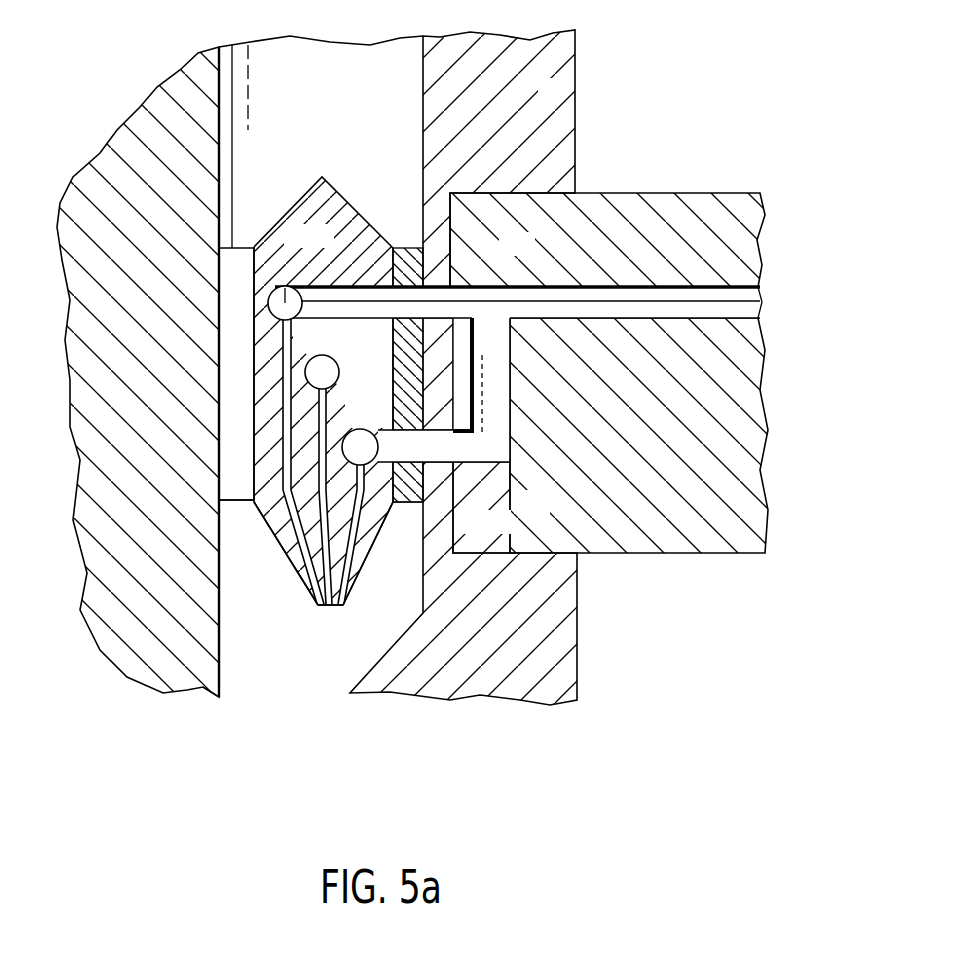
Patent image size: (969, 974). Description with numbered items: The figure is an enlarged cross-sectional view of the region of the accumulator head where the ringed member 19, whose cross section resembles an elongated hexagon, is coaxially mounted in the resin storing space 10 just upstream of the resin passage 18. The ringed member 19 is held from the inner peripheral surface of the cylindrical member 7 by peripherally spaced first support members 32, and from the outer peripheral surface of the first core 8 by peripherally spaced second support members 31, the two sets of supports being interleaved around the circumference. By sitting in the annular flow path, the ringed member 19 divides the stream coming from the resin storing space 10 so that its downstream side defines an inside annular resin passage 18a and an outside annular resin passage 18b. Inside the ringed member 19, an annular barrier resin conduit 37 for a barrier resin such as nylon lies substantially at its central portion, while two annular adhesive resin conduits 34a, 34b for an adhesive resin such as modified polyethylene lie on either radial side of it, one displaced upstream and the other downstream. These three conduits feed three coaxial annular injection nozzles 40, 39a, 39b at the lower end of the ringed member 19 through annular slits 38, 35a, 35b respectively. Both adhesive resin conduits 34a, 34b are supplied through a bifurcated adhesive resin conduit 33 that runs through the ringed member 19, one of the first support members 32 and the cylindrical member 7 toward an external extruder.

The cylindrical member 7 is at (547, 96).
The first core 8 is at (110, 153).
The resin storing space 10 is at (312, 78).
The resin passage 18 is at (283, 739).
The inside annular resin passage 18a is at (273, 586).
The outside annular resin passage 18b is at (413, 586).
The ringed member 19 is at (247, 398).
The second support member 31 is at (232, 257).
The first support member 32 is at (400, 247).
The bifurcated adhesive resin conduit 33 is at (440, 287).
The annular adhesive resin conduit 34a is at (285, 293).
The annular adhesive resin conduit 34b is at (368, 448).
The annular slit 35a is at (367, 523).
The annular slit 35b is at (292, 333).
The annular barrier resin conduit 37 is at (336, 373).
The annular slit 38 is at (328, 418).
The annular injection nozzle 39a is at (343, 606).
The annular injection nozzle 39b is at (317, 607).
The annular injection nozzle 40 is at (329, 608).